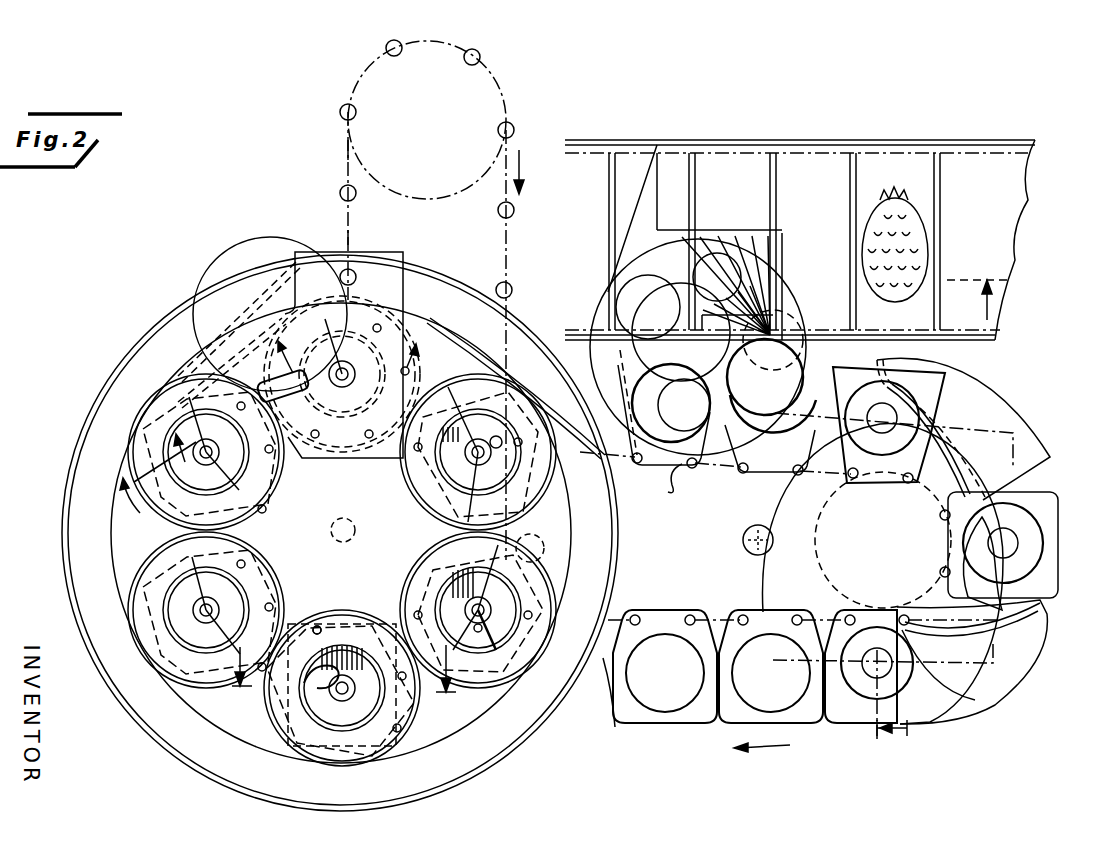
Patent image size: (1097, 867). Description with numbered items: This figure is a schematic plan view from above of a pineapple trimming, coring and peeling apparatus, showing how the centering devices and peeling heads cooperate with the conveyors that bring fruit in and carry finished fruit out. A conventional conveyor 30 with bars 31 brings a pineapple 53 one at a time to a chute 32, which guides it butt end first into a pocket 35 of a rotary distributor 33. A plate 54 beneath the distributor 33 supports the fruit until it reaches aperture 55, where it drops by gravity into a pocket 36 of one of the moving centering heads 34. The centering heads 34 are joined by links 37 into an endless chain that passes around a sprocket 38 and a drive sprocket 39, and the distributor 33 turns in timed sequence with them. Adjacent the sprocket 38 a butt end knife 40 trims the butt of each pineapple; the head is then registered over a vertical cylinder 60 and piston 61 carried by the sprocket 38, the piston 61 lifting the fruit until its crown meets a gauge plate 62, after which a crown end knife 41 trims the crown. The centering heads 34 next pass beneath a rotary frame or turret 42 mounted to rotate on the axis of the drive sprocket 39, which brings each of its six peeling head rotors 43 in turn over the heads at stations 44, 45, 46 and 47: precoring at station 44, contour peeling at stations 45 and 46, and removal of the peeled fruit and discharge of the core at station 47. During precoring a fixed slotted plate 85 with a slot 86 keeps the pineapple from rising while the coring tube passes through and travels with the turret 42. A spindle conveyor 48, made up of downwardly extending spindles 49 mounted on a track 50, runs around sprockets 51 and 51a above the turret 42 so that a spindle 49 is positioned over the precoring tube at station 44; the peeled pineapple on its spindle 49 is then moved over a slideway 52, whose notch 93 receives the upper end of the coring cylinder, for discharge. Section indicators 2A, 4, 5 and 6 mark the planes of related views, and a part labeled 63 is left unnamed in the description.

The conveyor 30 is at (982, 160).
The bars 31 is at (936, 160).
The chute 32 is at (744, 258).
The rotary distributor 33 is at (606, 308).
The centering heads 34 is at (659, 466).
The pockets 35 is at (712, 258).
The pocket 36 is at (772, 456).
The links 37 is at (728, 475).
The sprocket 38 is at (815, 572).
The drive sprocket 39 is at (357, 532).
The butt end knife 40 is at (1000, 406).
The crown end knife 41 is at (958, 702).
The rotary frame or turret 42 is at (120, 377).
The peeling head rotors 43 is at (186, 457).
The station 44 is at (285, 722).
The station 45 is at (142, 573).
The station 46 is at (150, 432).
The station 47 is at (408, 332).
The conveyor 48 is at (346, 238).
The spindles 49 is at (346, 190).
The track 50 is at (347, 152).
The sprocket 51 is at (500, 94).
The sprocket 51a is at (530, 548).
The slideway 52 is at (396, 272).
The pineapple 53 is at (916, 227).
The plate 54 is at (632, 226).
The aperture 55 is at (685, 483).
The vertical cylinder 60 is at (745, 553).
The piston 61 is at (605, 405).
The gauge plate 62 is at (928, 597).
The carrier plate 63 is at (213, 712).
The slotted plate 85 is at (293, 714).
The slot 86 is at (308, 630).
The notch 93 is at (278, 372).
The section line 2A is at (950, 521).
The section line 4 is at (341, 668).
The section line 5 is at (198, 425).
The section line 6 is at (294, 402).